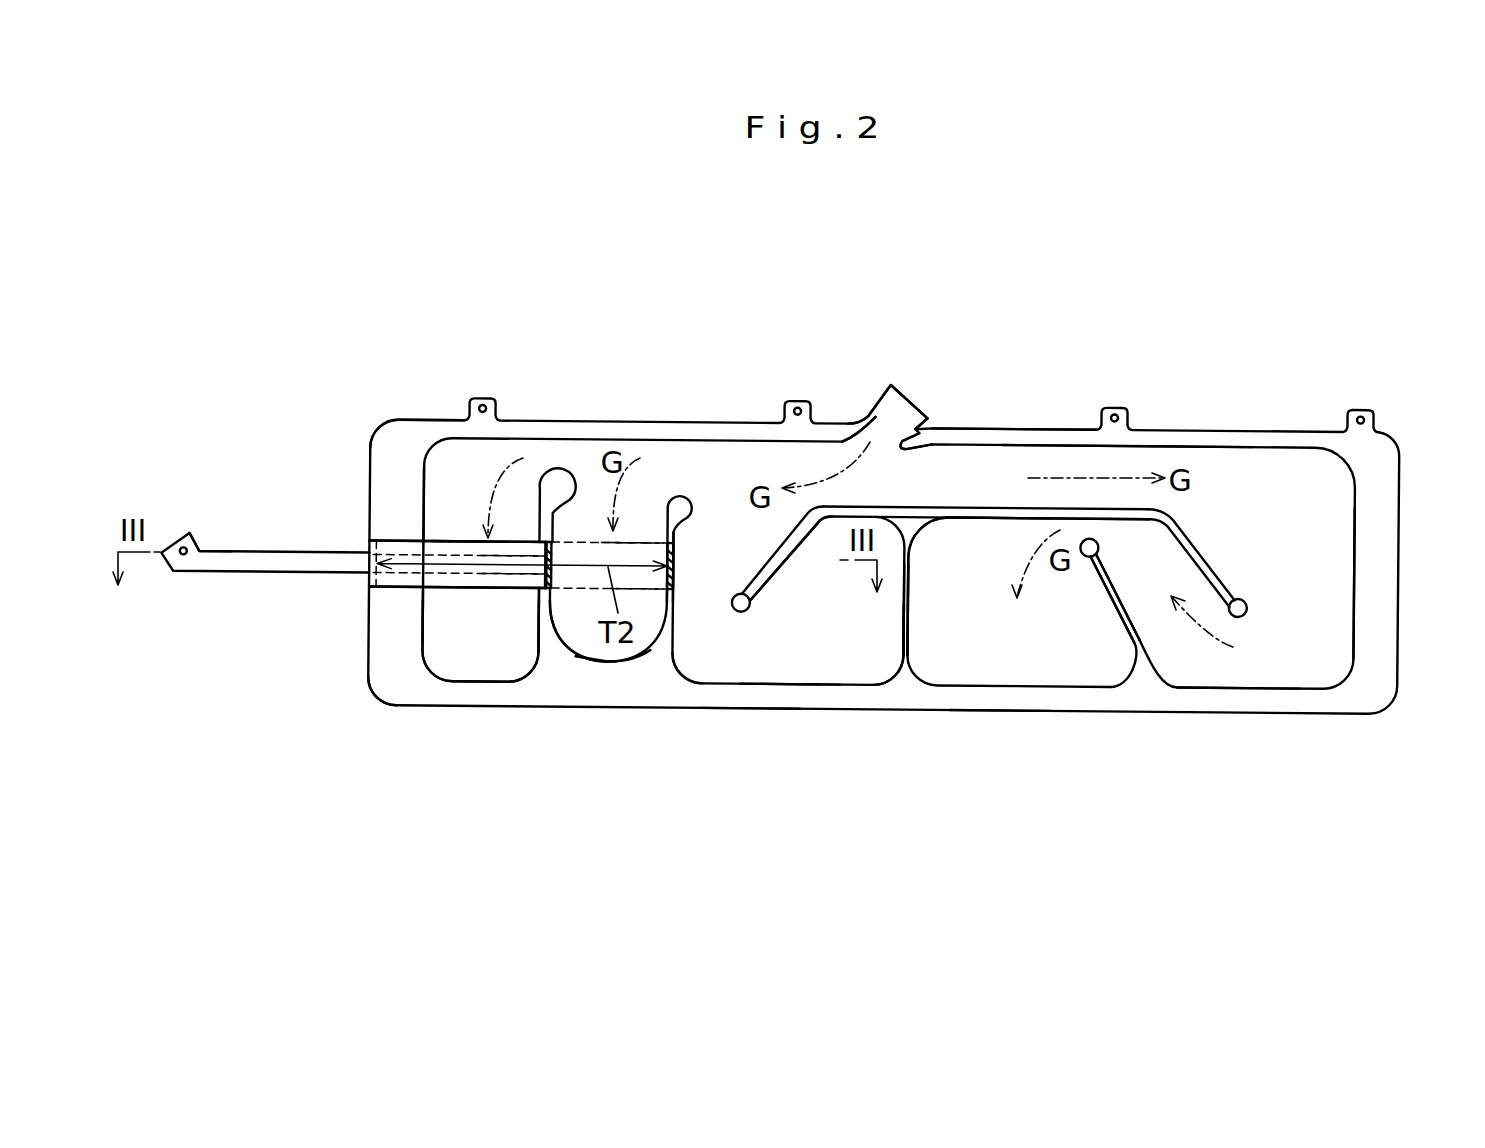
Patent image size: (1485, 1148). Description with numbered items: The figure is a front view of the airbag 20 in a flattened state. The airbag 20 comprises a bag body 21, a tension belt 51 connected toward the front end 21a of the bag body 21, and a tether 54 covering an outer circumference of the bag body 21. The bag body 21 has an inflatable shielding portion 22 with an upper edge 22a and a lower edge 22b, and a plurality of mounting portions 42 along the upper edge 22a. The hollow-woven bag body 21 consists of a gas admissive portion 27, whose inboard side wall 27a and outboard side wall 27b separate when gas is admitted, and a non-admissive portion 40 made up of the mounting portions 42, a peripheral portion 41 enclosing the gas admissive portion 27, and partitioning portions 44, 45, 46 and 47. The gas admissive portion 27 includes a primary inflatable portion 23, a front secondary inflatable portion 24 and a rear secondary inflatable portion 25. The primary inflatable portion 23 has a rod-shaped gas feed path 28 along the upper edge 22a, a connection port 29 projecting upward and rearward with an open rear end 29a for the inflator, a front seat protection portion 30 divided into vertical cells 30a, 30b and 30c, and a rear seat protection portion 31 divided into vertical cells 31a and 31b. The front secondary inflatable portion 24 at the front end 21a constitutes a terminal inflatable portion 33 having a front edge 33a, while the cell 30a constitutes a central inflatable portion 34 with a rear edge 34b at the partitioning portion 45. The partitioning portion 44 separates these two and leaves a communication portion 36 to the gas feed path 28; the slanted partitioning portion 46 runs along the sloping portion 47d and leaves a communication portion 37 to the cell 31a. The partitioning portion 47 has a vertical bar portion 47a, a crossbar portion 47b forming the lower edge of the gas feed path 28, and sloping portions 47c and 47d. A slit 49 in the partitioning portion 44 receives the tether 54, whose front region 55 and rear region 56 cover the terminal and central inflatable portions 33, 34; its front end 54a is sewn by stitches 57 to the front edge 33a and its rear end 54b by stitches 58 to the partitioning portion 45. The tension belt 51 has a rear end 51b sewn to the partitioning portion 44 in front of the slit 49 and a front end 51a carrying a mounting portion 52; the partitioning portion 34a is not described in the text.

The airbag 20 is at (1335, 296).
The bag body 21 is at (400, 397).
The front end 21a is at (381, 673).
The inflatable shielding portion 22 is at (748, 712).
The upper edge 22a is at (980, 429).
The lower edge 22b is at (1001, 712).
The primary inflatable portion 23 is at (716, 784).
The front secondary inflatable portion 24 is at (440, 689).
The rear secondary inflatable portion 25 is at (1063, 703).
The gas admissive portion 27 is at (984, 405).
The inboard side wall 27a is at (833, 670).
The outboard side wall 27b is at (872, 660).
The gas feed path 28 is at (1063, 462).
The connection port 29 is at (870, 398).
The rear end 29a is at (905, 404).
The front seat protection portion 30 is at (712, 712).
The vertical cell 30a is at (590, 640).
The vertical cell 30b is at (705, 536).
The vertical cell 30c is at (787, 626).
The rear seat protection portion 31 is at (1213, 703).
The vertical cell 31a is at (1168, 622).
The vertical cell 31b is at (1343, 583).
The terminal inflatable portion 33 is at (407, 654).
The front edge 33a is at (424, 619).
The central inflatable portion 34 is at (598, 719).
The first partition wall 34a is at (553, 625).
The rear edge 34b is at (693, 697).
The communication portion 36 is at (566, 449).
The communication portion 37 is at (1104, 533).
The non-admissive portion 40 is at (1069, 616).
The peripheral portion 41 is at (1192, 441).
The mounting portions 42 is at (482, 398).
The partitioning portion 44 is at (480, 641).
The partitioning portion 45 is at (650, 660).
The partitioning portion 46 is at (1117, 603).
The partitioning portion 47 is at (922, 641).
The vertical bar portion 47a is at (916, 619).
The crossbar portion 47b is at (990, 515).
The sloping portion 47c is at (790, 536).
The sloping portion 47d is at (1213, 562).
The slit 49 is at (553, 542).
The tension belt 51 is at (250, 591).
The front end 51a is at (199, 546).
The rear end 51b is at (536, 573).
The mounting portion 52 is at (183, 545).
The tether 54 is at (392, 520).
The front end 54a is at (372, 590).
The rear end 54b is at (678, 580).
The front region 55 is at (455, 546).
The rear region 56 is at (634, 554).
The stitches 57 is at (366, 548).
The stitches 58 is at (678, 561).